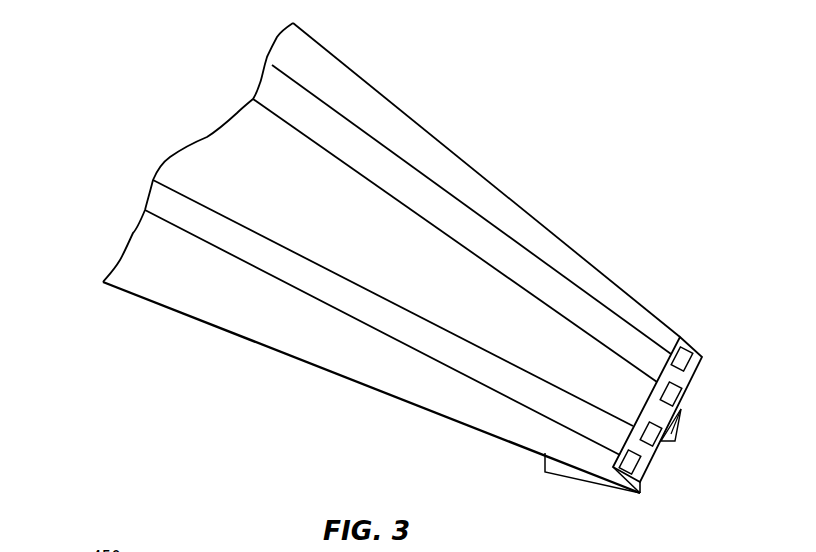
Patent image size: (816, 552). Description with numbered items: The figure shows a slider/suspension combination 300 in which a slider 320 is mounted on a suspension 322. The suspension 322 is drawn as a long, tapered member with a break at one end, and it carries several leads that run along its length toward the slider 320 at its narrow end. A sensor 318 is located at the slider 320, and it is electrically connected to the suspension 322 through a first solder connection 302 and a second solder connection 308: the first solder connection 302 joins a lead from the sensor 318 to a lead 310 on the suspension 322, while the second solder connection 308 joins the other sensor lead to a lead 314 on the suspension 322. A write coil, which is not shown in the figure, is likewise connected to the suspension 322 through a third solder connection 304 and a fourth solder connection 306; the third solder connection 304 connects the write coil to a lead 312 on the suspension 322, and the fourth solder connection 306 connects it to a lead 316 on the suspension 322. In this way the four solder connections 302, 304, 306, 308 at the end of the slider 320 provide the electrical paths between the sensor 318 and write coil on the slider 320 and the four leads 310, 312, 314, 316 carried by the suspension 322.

The slider/suspension combination 300 is at (100, 401).
The first solder connection 302 is at (628, 475).
The third solder connection 304 is at (657, 450).
The fourth solder connection 306 is at (682, 393).
The second solder connection 308 is at (700, 358).
The lead 310 is at (352, 318).
The lead 312 is at (490, 345).
The lead 314 is at (545, 262).
The lead 316 is at (598, 335).
The sensor 318 is at (673, 423).
The slider 320 is at (578, 472).
The suspension 322 is at (483, 418).